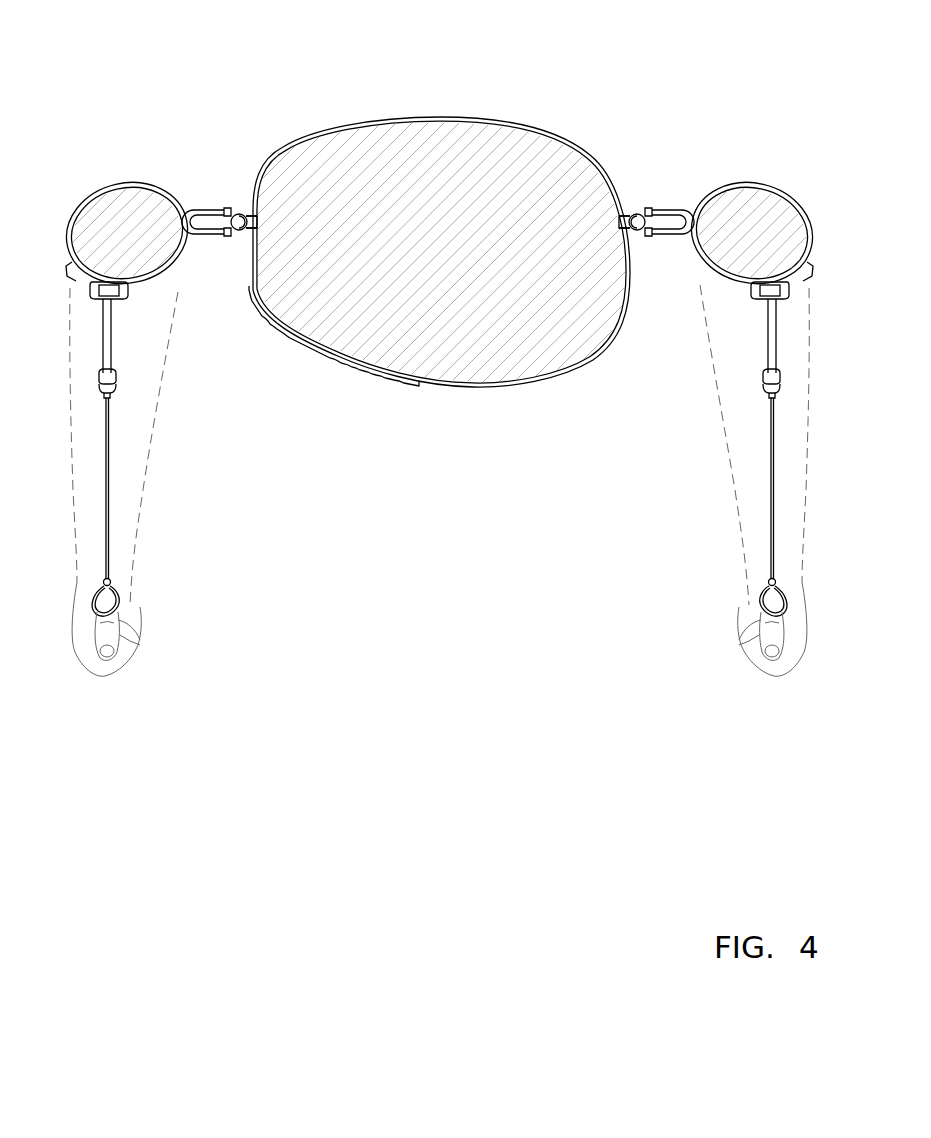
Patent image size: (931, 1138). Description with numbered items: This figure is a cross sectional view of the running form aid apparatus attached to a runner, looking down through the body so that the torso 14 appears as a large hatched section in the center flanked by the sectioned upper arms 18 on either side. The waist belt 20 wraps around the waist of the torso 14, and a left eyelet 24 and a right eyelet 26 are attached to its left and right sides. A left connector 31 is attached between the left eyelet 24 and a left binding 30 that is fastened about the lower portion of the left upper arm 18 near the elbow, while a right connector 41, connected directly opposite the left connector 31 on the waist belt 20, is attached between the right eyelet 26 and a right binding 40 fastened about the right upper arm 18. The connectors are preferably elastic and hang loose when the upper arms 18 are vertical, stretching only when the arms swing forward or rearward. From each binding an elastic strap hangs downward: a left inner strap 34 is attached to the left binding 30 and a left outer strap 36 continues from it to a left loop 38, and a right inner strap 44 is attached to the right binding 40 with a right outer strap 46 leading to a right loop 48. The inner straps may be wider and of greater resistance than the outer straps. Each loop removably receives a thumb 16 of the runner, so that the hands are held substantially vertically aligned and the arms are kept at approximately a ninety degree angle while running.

The torso 14 is at (450, 192).
The thumb 16 is at (113, 658).
The upper arm 18 is at (122, 222).
The waist belt 20 is at (439, 198).
The left eyelet 24 is at (624, 213).
The right eyelet 26 is at (259, 212).
The left binding 30 is at (724, 290).
The left connector 31 is at (670, 208).
The left inner strap 34 is at (768, 350).
The left outer strap 36 is at (770, 505).
The left loop 38 is at (768, 588).
The right binding 40 is at (160, 291).
The right connector 41 is at (208, 210).
The right inner strap 44 is at (111, 352).
The right outer strap 46 is at (110, 482).
The right loop 48 is at (116, 590).